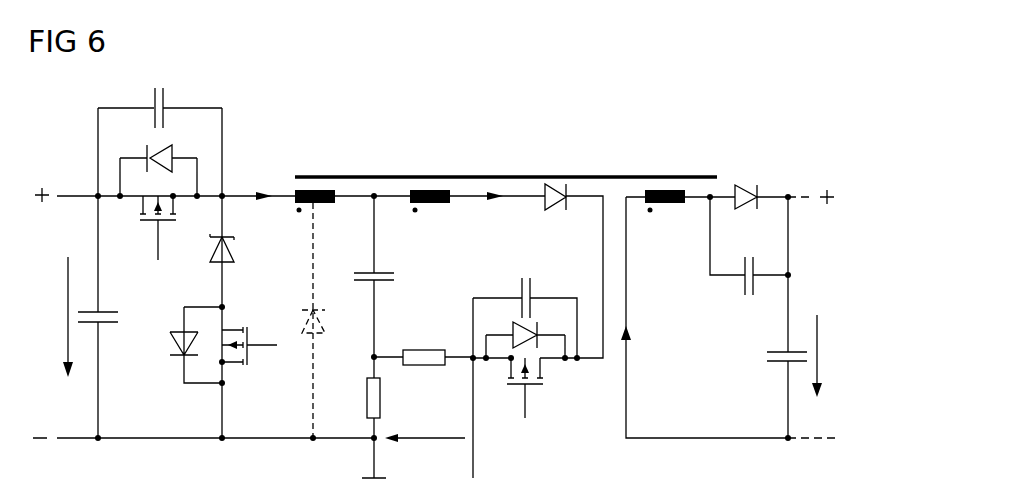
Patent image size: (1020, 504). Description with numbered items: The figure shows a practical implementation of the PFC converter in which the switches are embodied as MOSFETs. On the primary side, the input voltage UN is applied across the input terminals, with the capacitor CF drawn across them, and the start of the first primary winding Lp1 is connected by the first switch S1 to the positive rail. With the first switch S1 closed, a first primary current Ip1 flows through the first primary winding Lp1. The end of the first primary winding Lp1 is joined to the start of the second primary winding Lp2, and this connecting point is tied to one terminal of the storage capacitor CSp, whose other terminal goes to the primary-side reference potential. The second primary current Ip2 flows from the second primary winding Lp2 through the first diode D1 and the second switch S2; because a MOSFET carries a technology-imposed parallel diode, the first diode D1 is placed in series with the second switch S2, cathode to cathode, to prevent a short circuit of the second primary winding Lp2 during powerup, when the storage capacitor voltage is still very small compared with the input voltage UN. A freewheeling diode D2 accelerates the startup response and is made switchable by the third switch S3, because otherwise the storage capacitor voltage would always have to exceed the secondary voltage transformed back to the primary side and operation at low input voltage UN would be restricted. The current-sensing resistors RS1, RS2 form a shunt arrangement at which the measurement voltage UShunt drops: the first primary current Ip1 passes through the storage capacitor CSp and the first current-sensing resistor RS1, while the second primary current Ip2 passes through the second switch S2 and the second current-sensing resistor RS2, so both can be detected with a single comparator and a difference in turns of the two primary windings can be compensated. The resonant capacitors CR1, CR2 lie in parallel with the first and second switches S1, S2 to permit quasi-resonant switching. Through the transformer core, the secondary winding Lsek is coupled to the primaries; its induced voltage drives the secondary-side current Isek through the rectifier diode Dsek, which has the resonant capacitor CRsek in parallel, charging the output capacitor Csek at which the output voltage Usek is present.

The resonant capacitor CR1 is at (165, 100).
The first switch S1 is at (148, 222).
The freewheeling diode D2 is at (230, 240).
The input voltage UN is at (48, 317).
The filter capacitor CF is at (106, 326).
The third switch S3 is at (249, 355).
The first primary current Ip1 is at (263, 181).
The first primary winding Lp1 is at (313, 190).
The storage capacitor CSp is at (370, 270).
The second primary winding Lp2 is at (430, 206).
The second primary current Ip2 is at (497, 216).
The first diode D1 is at (556, 207).
The second current-sensing resistor RS2 is at (430, 349).
The first current-sensing resistor RS1 is at (381, 396).
The measurement voltage UShunt is at (417, 390).
The resonant capacitor CR2 is at (518, 292).
The second switch S2 is at (530, 391).
The secondary winding Lsek is at (668, 206).
The rectifier diode Dsek is at (748, 189).
The resonant capacitor CRsek is at (742, 290).
The secondary-side current Isek is at (645, 337).
The output capacitor Csek is at (765, 360).
The output voltage Usek is at (840, 356).